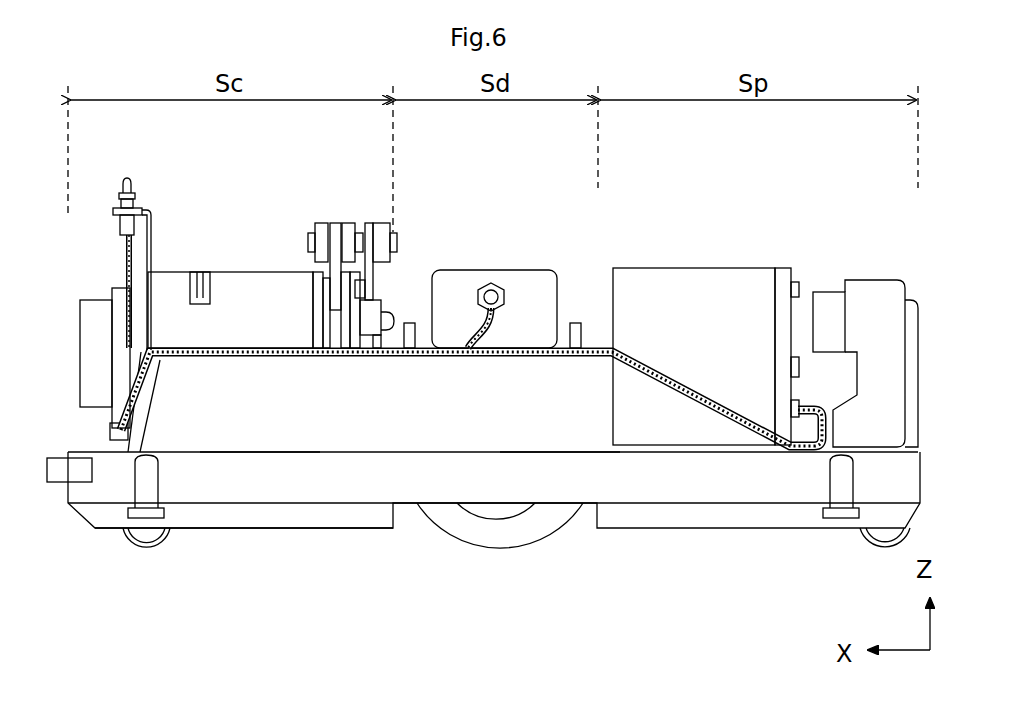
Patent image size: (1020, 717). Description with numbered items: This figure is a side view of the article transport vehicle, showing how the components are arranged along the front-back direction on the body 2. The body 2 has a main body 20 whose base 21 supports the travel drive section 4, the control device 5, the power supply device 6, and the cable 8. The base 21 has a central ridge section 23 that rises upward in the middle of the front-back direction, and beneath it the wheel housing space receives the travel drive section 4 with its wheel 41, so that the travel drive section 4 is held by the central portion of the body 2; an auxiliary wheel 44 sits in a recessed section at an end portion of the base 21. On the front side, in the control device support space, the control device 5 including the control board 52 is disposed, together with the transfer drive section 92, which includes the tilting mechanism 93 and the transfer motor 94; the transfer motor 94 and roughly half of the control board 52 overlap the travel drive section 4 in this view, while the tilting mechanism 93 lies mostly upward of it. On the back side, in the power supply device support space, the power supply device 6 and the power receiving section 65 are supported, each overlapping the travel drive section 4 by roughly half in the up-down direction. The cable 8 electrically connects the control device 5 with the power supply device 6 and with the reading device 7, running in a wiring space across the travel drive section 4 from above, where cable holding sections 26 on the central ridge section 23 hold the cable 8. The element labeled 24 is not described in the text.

The body 2 is at (200, 160).
The travel drive section 4 is at (440, 540).
The control device 5 is at (72, 356).
The power supply device 6 is at (700, 268).
The reading device 7 is at (490, 284).
The cable 8 is at (255, 348).
The main body 20 is at (70, 446).
The base 21 is at (95, 513).
The central ridge section 23 is at (552, 400).
The frame member 24 is at (262, 420).
The cable holding section 26 is at (408, 322).
The wheel 41 is at (495, 535).
The auxiliary wheel 44 is at (145, 545).
The control board 52 is at (133, 250).
The power receiving section 65 is at (870, 282).
The transfer drive section 92 is at (332, 205).
The tilting mechanism 93 is at (372, 222).
The transfer motor 94 is at (245, 270).